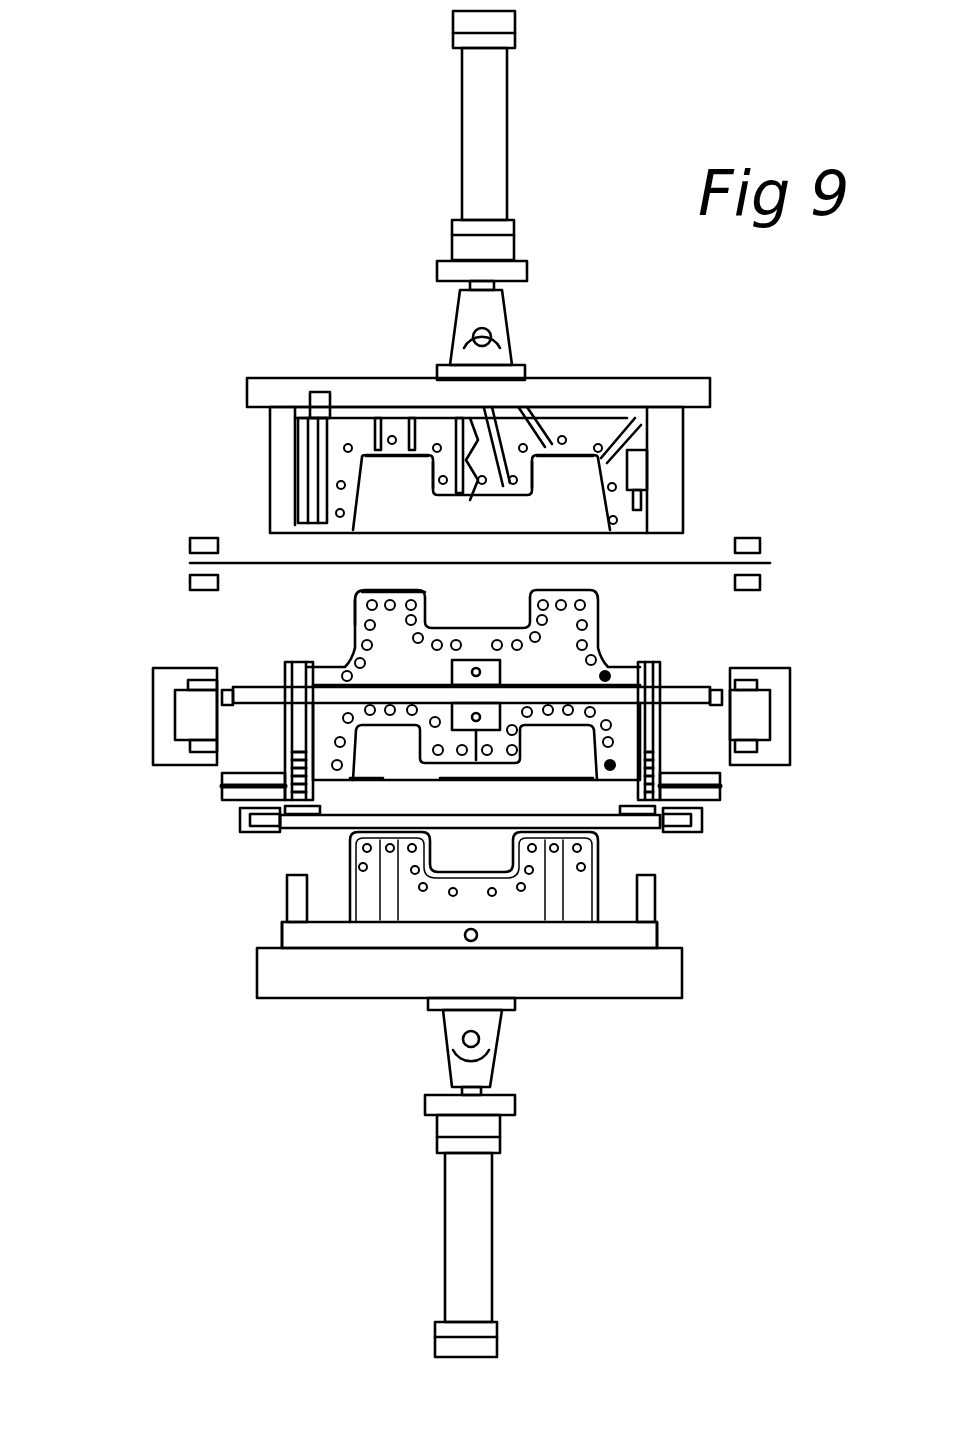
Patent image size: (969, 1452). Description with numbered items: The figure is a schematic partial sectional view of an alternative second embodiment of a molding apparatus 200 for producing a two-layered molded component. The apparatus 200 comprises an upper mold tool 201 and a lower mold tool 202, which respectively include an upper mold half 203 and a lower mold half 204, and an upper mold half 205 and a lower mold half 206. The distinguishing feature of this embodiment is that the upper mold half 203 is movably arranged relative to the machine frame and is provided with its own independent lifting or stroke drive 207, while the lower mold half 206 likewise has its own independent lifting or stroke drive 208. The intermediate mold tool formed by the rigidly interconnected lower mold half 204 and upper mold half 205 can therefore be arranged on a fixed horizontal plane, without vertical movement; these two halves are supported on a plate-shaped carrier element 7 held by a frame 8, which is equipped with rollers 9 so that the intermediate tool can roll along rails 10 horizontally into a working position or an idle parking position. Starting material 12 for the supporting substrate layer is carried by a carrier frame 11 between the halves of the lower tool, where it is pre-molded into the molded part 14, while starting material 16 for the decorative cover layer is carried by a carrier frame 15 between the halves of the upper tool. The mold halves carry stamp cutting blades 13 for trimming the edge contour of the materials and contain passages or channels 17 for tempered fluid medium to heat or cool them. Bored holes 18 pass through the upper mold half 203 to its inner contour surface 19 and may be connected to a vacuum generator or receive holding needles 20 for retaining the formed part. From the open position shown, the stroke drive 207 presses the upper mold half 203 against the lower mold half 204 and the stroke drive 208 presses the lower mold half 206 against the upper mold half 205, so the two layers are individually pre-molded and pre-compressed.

The apparatus 200 is at (235, 293).
The upper mold tool 201 is at (263, 683).
The lower mold tool 202 is at (282, 935).
The upper mold half 203 is at (673, 478).
The lower mold half 204 is at (600, 643).
The upper mold half 205 is at (270, 757).
The lower mold half 206 is at (627, 935).
The lifting or stroke drive 207 is at (497, 197).
The lifting or stroke drive 208 is at (478, 1298).
The carrier element 7 is at (693, 690).
The frame 8 is at (198, 713).
The rollers 9 is at (197, 748).
The rails 10 is at (790, 722).
The carrier frame 11 is at (702, 815).
The starting material 12 is at (635, 830).
The stamp cutting blades 13 is at (343, 783).
The molded part 14 is at (343, 883).
The carrier frame 15 is at (748, 543).
The starting material 16 is at (753, 565).
The passages or channels 17 is at (378, 425).
The bored holes 18 is at (590, 510).
The inner contour surface 19 is at (428, 510).
The holding needles 20 is at (645, 410).